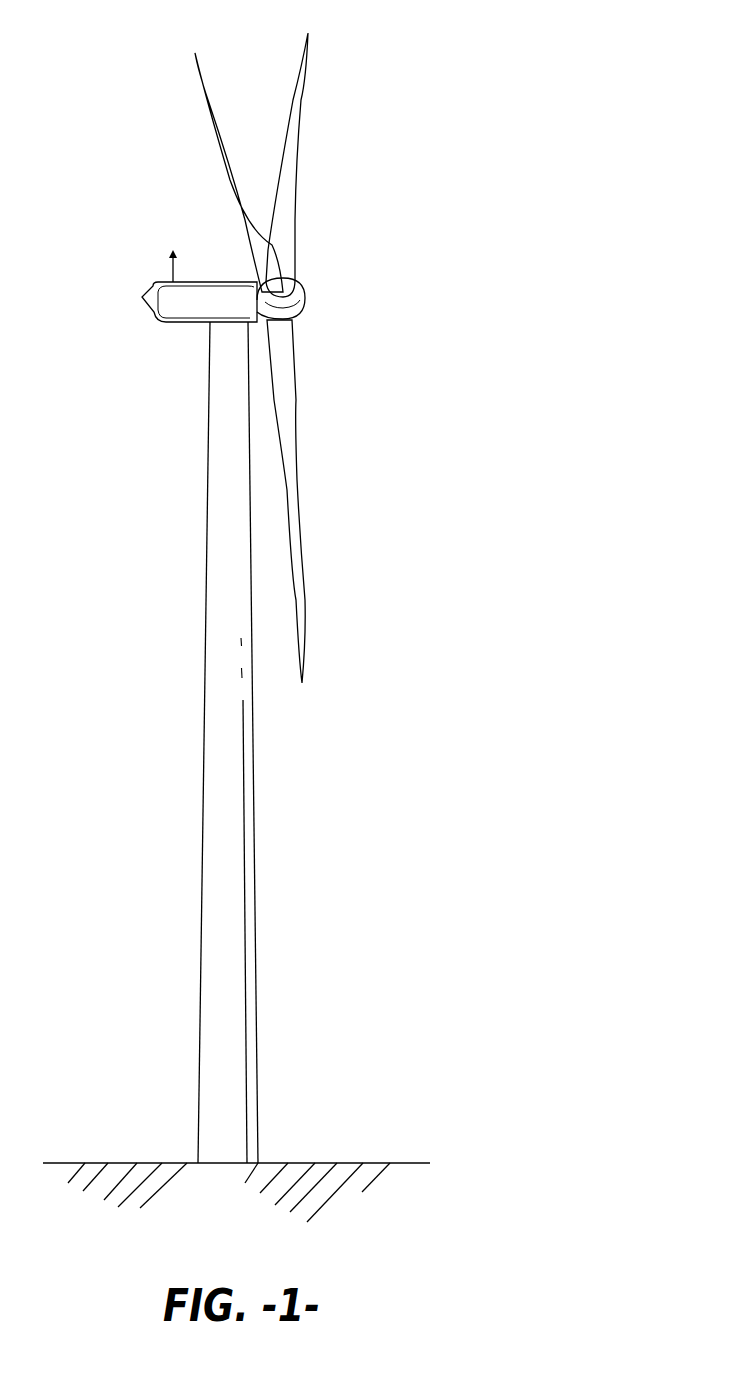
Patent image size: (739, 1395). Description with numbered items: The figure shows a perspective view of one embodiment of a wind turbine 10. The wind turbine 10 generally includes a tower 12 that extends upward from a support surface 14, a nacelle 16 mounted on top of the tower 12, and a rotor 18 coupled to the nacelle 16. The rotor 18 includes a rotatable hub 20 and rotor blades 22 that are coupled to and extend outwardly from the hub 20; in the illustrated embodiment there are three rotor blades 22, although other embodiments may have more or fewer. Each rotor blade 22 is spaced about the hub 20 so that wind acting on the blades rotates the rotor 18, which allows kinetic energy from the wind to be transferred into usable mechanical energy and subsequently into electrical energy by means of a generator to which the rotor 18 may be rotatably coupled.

The wind turbine 10 is at (304, 598).
The tower 12 is at (215, 858).
The support surface 14 is at (327, 1163).
The nacelle 16 is at (185, 322).
The rotor 18 is at (330, 311).
The rotatable hub 20 is at (307, 298).
The rotor blade 22 is at (218, 135).